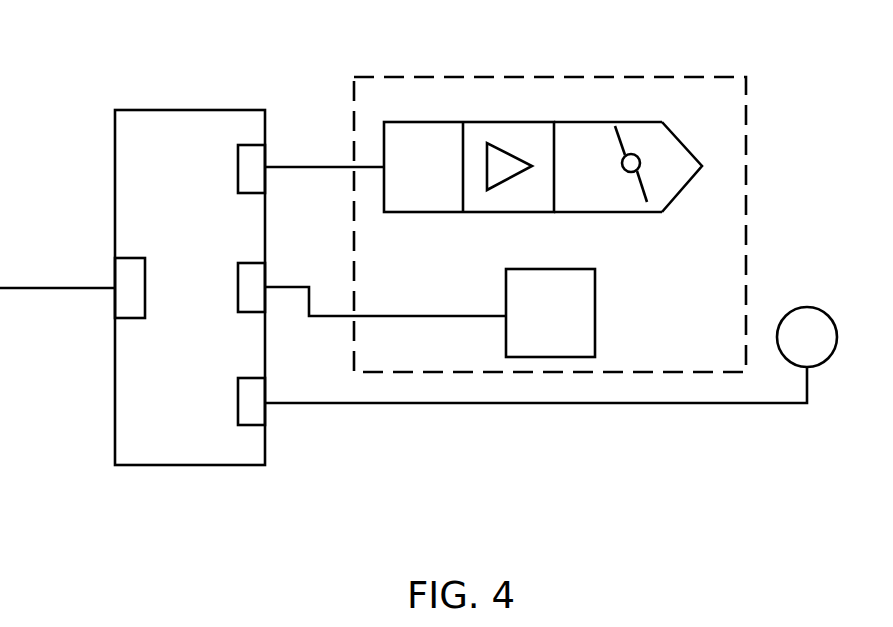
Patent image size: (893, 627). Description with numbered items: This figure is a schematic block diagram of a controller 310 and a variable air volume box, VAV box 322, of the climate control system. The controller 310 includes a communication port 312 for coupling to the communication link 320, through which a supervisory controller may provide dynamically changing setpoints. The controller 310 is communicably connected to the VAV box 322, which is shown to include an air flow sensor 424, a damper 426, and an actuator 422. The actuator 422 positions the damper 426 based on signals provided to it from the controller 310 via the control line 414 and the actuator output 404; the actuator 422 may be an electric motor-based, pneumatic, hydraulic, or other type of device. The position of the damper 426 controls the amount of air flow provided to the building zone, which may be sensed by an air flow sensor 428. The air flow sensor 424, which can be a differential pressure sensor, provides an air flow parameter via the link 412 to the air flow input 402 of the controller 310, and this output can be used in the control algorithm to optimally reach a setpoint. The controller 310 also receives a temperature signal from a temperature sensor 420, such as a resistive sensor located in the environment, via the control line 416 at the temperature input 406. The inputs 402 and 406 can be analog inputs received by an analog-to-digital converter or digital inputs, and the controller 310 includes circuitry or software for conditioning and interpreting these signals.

The controller 310 is at (215, 118).
The communication port 312 is at (128, 275).
The communication link 320 is at (33, 290).
The VAV box 322 is at (737, 129).
The air flow input 402 is at (258, 157).
The actuator output 404 is at (258, 278).
The temperature input 406 is at (257, 412).
The link 412 is at (335, 165).
The control line 414 is at (335, 313).
The control line 416 is at (428, 403).
The temperature sensor 420 is at (822, 323).
The actuator 422 is at (585, 317).
The air flow sensor 424 is at (511, 132).
The damper 426 is at (603, 136).
The air flow sensor 428 is at (685, 140).